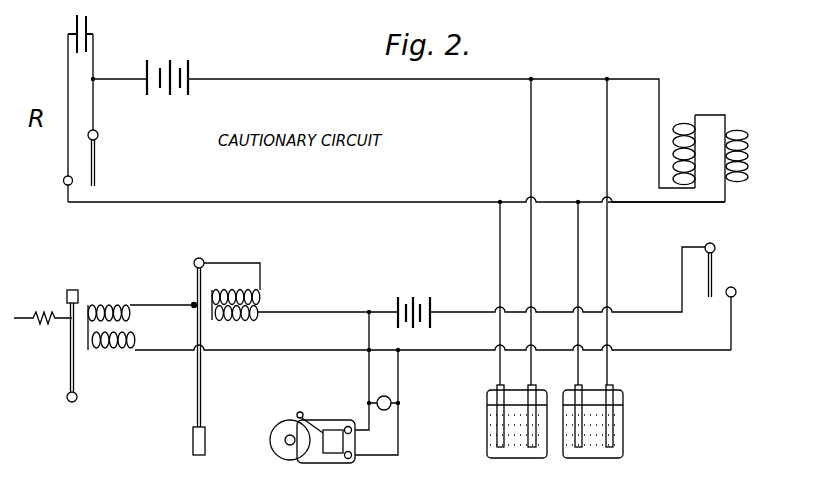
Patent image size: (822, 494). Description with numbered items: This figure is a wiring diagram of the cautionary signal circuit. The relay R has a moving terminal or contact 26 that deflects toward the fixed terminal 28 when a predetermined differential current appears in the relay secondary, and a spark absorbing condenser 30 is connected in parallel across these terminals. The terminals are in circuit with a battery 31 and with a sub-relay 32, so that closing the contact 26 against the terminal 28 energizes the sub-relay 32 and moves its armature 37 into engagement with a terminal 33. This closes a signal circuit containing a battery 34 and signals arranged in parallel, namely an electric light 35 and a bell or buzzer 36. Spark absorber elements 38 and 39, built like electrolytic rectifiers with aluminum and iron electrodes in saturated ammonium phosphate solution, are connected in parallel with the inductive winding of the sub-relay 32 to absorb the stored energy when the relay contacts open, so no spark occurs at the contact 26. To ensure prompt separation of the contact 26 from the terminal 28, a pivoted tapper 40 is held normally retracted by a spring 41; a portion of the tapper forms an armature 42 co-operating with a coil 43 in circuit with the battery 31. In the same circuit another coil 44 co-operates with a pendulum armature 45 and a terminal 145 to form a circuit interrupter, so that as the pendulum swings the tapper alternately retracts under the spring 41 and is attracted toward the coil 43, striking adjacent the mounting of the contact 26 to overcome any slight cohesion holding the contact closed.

The moving terminal or contact 26 is at (97, 152).
The fixed terminal 28 is at (63, 180).
The spark absorbing condenser 30 is at (70, 30).
The battery 31 is at (173, 60).
The sub-relay 32 is at (727, 158).
The terminal 33 is at (736, 293).
The battery or source of power 34 is at (430, 305).
The electric light 35 is at (384, 396).
The bell or buzzer 36 is at (283, 421).
The armature 37 is at (716, 262).
The spark absorber element 38 is at (623, 411).
The spark absorber element 39 is at (487, 410).
The pivoted tapper 40 is at (67, 296).
The spring 41 is at (42, 323).
The armature 42 is at (72, 325).
The coil 43 is at (115, 352).
The coil 44 is at (240, 322).
The pendulum armature 45 is at (202, 376).
The terminal 145 is at (193, 303).